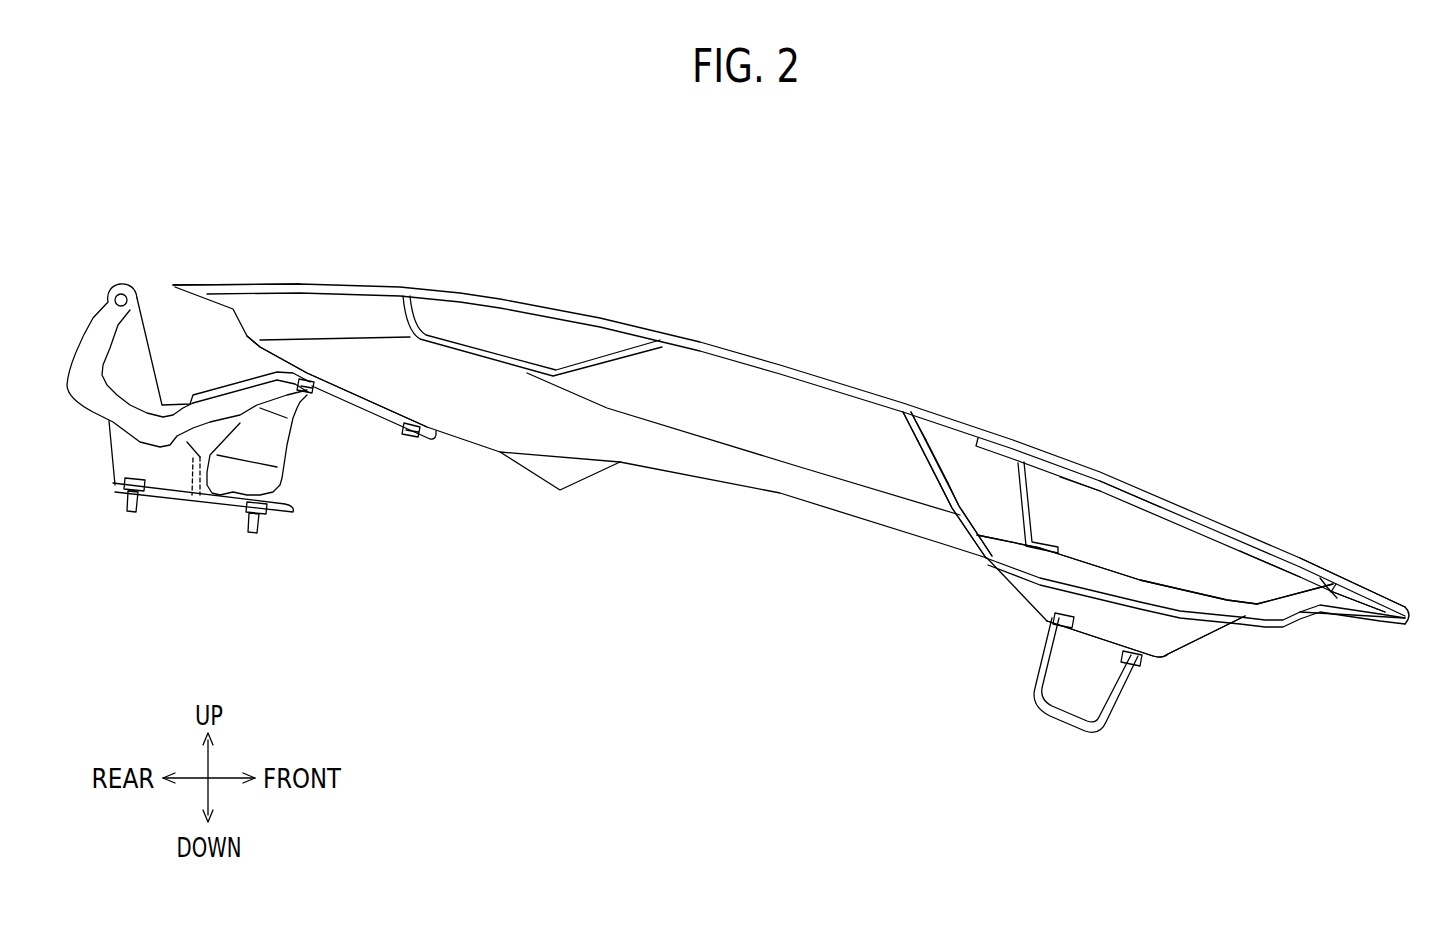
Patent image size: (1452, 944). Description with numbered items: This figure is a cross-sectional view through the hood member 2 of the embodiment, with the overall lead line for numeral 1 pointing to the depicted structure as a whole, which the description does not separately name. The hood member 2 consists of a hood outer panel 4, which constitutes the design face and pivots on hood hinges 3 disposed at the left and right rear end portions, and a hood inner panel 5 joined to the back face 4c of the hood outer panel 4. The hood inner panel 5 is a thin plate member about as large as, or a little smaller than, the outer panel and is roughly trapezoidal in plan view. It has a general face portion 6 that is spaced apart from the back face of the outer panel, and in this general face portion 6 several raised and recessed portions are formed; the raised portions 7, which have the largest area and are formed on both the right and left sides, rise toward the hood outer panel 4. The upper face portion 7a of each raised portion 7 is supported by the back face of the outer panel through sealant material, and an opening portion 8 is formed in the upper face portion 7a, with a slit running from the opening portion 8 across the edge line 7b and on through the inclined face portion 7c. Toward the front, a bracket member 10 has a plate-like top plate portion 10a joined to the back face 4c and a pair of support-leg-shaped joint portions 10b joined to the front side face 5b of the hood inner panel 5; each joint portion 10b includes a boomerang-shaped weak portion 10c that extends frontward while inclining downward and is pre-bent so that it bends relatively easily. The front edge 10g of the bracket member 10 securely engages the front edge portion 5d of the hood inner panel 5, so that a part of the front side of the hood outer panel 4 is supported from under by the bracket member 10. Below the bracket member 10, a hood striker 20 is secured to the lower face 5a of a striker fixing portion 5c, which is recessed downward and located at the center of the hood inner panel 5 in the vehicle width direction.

The vehicle front structure 1 is at (183, 262).
The hood member 2 is at (1362, 686).
The hood hinge 3 is at (296, 512).
The hood outer panel 4 is at (1360, 600).
The back face 4c is at (1134, 485).
The hood inner panel 5 is at (1360, 613).
The lower face 5a is at (1127, 667).
The front side face 5b is at (1053, 620).
The striker fixing portion 5c is at (1194, 638).
The front edge portion 5d is at (1342, 593).
The general face portion 6 is at (482, 363).
The raised portion 7 is at (940, 442).
The upper face portion 7a is at (907, 407).
The edge line 7b is at (927, 437).
The inclined face portion 7c is at (940, 466).
The opening portion 8 is at (903, 412).
The bracket member 10 is at (1196, 534).
The top plate portion 10a is at (1270, 544).
The joint portion 10b is at (1030, 497).
The weak portion 10c is at (1092, 496).
The front edge 10g is at (1327, 578).
The hood striker 20 is at (1108, 718).